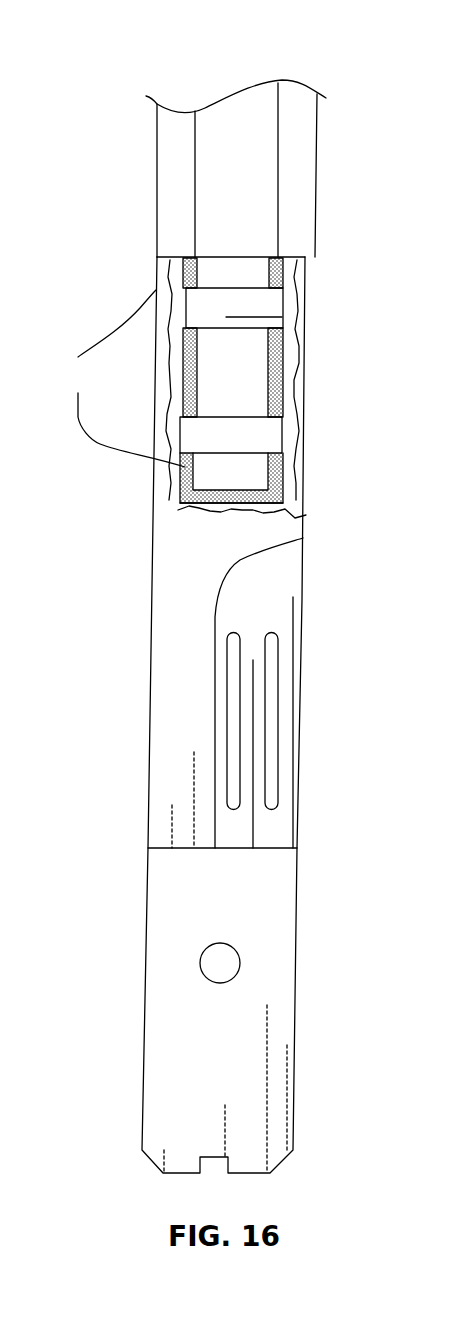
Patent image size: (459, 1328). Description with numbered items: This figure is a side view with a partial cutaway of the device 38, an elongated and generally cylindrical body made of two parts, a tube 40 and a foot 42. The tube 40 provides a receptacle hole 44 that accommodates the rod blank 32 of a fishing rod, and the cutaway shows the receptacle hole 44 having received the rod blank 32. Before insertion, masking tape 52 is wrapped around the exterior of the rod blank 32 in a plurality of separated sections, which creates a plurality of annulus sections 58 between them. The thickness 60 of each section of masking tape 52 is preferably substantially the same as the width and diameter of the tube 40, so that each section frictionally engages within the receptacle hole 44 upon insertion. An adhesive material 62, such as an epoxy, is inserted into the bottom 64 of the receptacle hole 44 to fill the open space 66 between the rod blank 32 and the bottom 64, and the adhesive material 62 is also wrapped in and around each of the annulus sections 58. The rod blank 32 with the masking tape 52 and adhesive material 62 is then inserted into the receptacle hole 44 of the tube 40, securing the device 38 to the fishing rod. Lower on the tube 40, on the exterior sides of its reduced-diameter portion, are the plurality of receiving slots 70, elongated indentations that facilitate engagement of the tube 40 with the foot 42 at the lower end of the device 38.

The thickness 60 is at (288, 75).
The rod blank 32 is at (253, 186).
The adhesive material 62 is at (158, 262).
The masking tape 52 is at (258, 299).
The annulus sections 58 is at (158, 372).
The receptacle hole 44 is at (283, 495).
The open space 66 is at (200, 513).
The bottom 64 is at (282, 521).
The tube 40 is at (183, 553).
The device 38 is at (113, 592).
The plurality of receiving slots 70 is at (240, 702).
The foot 42 is at (168, 898).